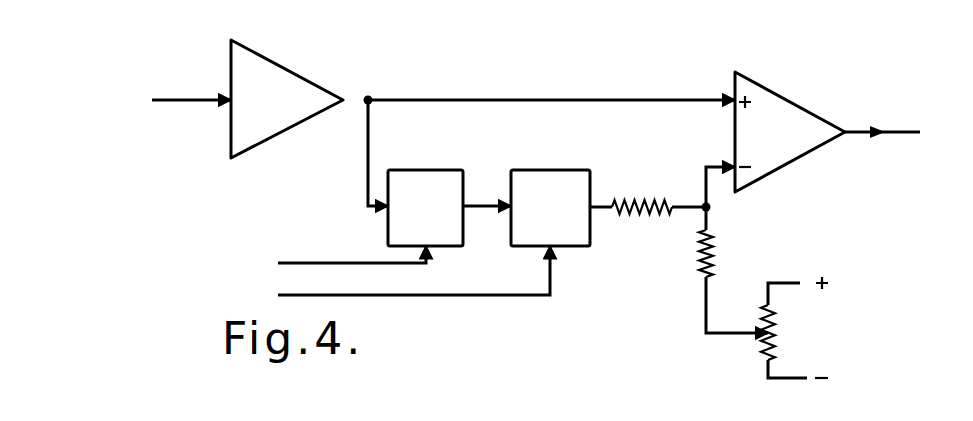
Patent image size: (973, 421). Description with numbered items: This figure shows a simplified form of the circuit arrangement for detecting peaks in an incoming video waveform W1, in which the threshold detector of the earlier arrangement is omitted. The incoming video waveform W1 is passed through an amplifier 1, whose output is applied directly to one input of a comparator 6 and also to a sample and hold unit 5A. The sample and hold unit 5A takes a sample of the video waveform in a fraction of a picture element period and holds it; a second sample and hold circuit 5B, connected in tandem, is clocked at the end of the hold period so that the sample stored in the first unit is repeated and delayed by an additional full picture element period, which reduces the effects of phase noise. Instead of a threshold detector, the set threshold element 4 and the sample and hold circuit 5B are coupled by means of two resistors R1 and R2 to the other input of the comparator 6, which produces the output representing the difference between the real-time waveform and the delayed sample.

The amplifier 1 is at (298, 70).
The sample and hold unit 5A is at (418, 168).
The sample and hold circuit 5B is at (541, 168).
The comparator 6 is at (795, 99).
The set threshold element 4 is at (774, 300).
The incoming video waveform W1 is at (178, 82).
The resistor R1 is at (648, 192).
The resistor R2 is at (733, 270).